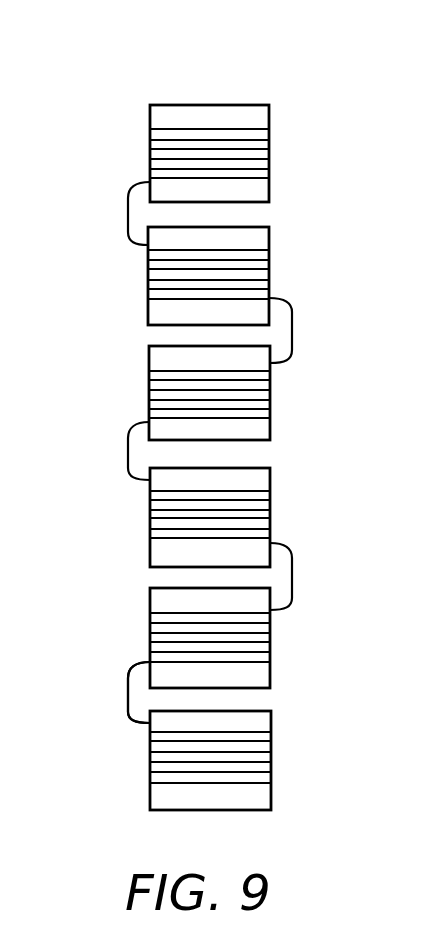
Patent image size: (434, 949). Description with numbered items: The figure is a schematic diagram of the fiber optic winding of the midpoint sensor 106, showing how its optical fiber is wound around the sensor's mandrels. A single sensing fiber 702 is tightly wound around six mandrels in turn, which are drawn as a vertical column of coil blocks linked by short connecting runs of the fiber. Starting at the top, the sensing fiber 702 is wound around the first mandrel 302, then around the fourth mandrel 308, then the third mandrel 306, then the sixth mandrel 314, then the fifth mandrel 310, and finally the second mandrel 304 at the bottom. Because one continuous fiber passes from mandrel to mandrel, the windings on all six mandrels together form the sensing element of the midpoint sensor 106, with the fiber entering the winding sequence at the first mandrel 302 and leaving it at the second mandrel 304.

The midpoint sensor 106 is at (253, 92).
The first mandrel 302 is at (269, 117).
The fourth mandrel 308 is at (269, 240).
The third mandrel 306 is at (270, 428).
The sixth mandrel 314 is at (270, 478).
The fifth mandrel 310 is at (270, 670).
The second mandrel 304 is at (271, 790).
The sensing fiber 702 is at (128, 681).